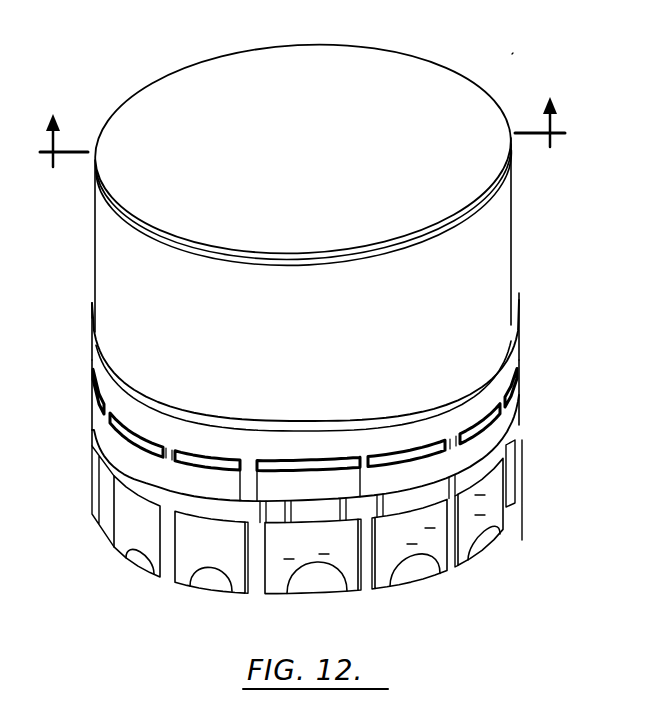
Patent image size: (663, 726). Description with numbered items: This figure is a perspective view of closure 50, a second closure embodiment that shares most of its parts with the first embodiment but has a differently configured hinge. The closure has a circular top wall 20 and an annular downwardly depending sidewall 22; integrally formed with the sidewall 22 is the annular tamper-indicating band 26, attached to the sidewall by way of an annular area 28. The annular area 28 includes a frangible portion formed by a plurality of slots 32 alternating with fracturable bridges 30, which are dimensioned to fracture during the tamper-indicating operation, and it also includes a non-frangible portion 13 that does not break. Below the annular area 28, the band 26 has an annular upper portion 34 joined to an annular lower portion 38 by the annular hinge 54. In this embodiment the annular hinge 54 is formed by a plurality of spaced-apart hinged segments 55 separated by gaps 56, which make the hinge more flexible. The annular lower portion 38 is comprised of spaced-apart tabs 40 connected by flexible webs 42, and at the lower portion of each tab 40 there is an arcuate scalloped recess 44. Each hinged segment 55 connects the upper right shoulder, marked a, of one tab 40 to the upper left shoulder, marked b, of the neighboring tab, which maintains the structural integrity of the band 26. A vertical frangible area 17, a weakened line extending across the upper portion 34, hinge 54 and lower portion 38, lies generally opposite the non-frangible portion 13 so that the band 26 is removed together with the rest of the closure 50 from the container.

The closure 50 is at (514, 52).
The non-frangible portion 13 is at (302, 124).
The top wall 20 is at (312, 143).
The sidewall 22 is at (470, 284).
The annular area 28 is at (540, 347).
The annular tamper-indicating band 26 is at (541, 377).
The fracturable bridges 30 is at (167, 447).
The slots 32 is at (132, 423).
The vertical frangible area 17 is at (246, 475).
The annular hinge 54 is at (541, 405).
The annular upper portion 34 is at (130, 443).
The gaps 56 is at (135, 488).
The annular lower portion 38 is at (556, 450).
The tabs 40 is at (140, 517).
The scalloped recess 44 is at (203, 568).
The flexible webs 42 is at (454, 525).
The hinged segments 55 is at (475, 528).